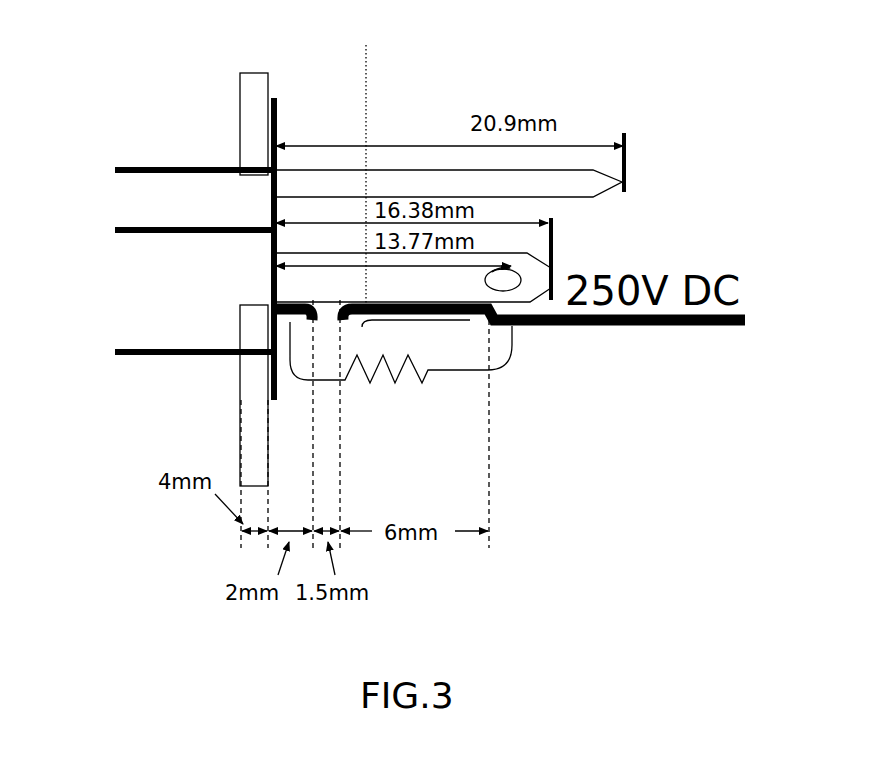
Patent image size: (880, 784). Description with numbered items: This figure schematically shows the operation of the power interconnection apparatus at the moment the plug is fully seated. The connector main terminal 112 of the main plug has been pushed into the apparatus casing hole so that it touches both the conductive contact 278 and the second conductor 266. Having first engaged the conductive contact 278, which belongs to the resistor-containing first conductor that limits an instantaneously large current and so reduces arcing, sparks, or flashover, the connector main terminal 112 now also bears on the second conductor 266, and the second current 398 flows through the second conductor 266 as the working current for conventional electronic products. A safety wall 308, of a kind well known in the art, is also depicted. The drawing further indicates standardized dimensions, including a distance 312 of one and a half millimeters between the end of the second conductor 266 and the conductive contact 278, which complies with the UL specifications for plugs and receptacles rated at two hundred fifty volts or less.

The connector main terminal 112 is at (322, 263).
The second conductor 266 is at (364, 161).
The conductive contact 278 is at (271, 299).
The safety wall 308 is at (240, 143).
The distance 312 is at (327, 522).
The second current 398 is at (413, 325).